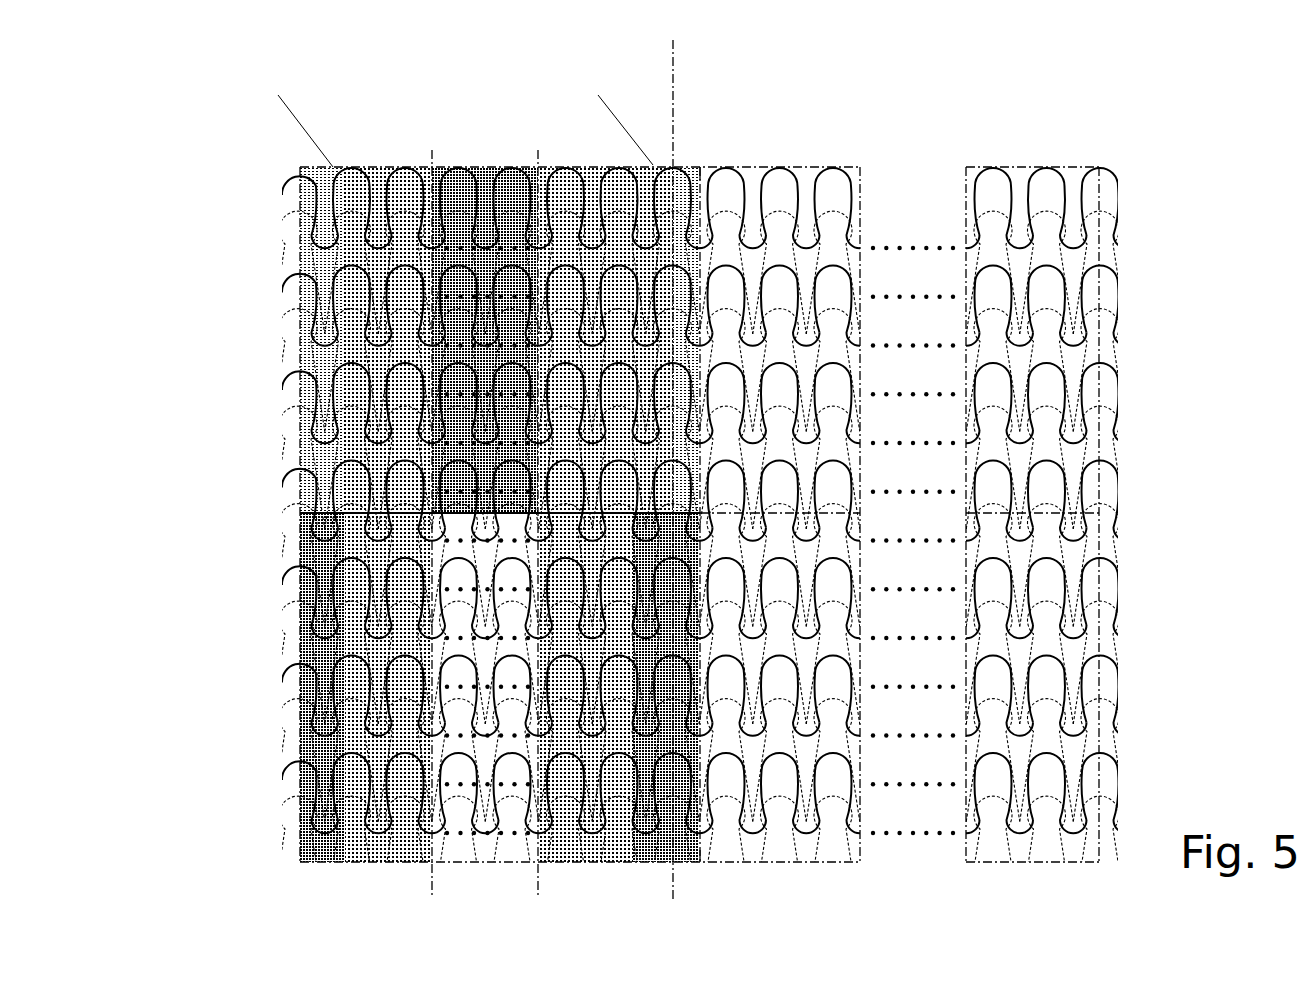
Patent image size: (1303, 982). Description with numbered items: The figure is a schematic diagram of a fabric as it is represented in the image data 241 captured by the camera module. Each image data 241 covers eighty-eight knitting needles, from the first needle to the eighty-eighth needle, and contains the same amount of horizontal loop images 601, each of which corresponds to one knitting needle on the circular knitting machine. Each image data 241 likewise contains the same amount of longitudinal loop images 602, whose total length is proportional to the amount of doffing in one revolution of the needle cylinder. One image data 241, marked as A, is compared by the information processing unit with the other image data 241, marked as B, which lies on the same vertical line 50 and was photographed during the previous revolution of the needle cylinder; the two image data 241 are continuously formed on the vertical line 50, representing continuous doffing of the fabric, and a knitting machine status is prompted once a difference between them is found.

The horizontal loop images 601 is at (638, 63).
The longitudinal loop images 602 is at (273, 173).
The vertical line 50 is at (675, 66).
The image data 241 is at (1100, 292).
The image data to be compared A is at (712, 863).
The other image data in comparison B is at (698, 167).